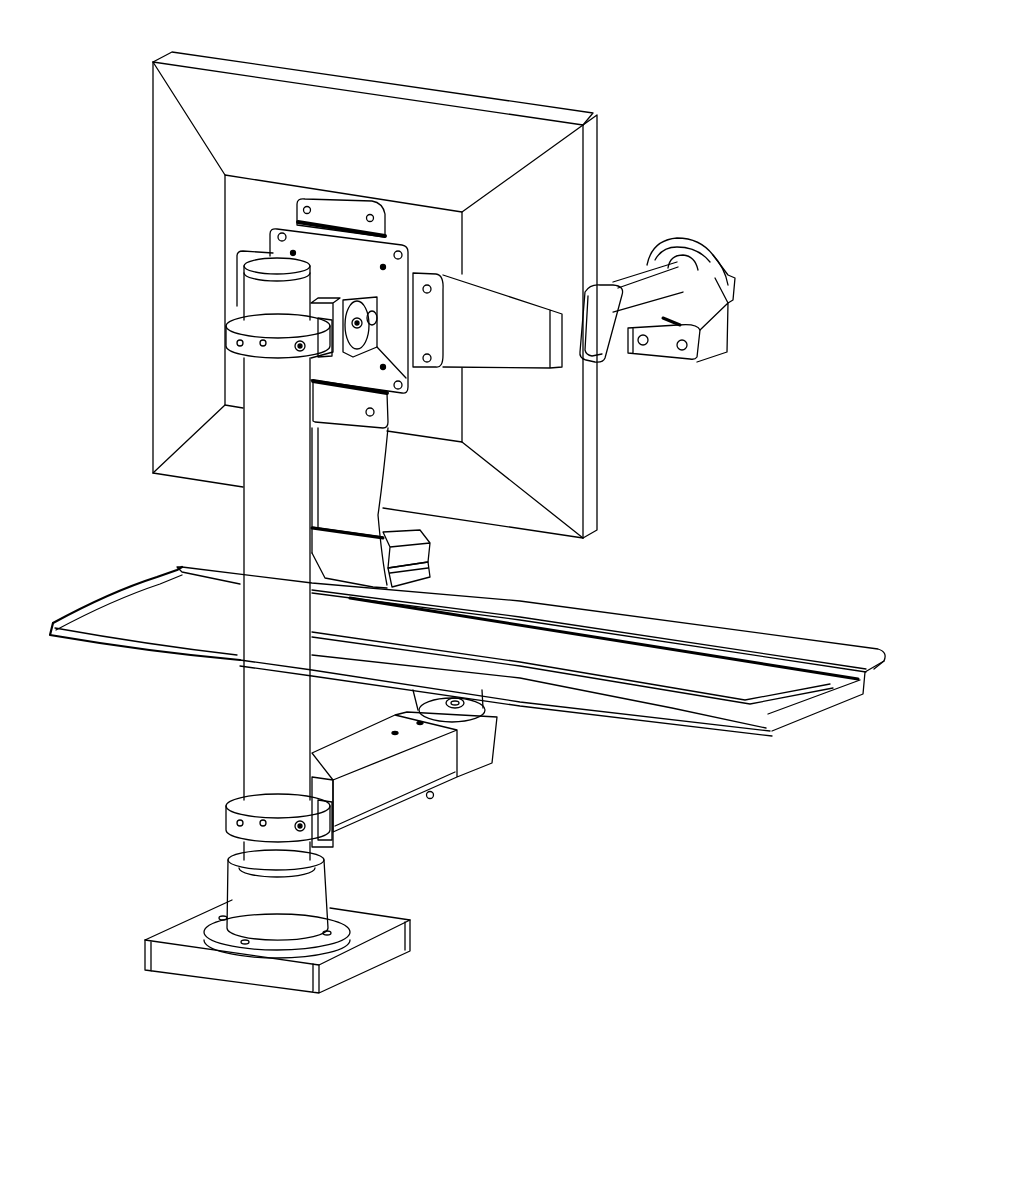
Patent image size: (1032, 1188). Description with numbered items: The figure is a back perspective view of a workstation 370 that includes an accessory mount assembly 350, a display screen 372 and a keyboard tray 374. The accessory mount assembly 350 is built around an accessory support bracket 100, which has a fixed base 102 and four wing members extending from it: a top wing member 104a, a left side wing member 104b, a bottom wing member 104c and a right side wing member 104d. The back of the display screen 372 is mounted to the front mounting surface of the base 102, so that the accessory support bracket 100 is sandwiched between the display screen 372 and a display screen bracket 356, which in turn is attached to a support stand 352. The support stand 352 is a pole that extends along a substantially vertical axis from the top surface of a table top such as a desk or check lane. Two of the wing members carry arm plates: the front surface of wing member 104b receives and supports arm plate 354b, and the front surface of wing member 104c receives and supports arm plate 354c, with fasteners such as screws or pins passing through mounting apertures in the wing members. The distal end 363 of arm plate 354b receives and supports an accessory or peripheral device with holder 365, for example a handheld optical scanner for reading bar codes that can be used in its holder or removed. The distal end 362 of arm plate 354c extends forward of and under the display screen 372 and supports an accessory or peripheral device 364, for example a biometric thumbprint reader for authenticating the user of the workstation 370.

The accessory support bracket 100 is at (437, 262).
The base 102 is at (400, 338).
The top wing member 104a is at (344, 200).
The left side wing member 104b is at (428, 330).
The bottom wing member 104c is at (342, 403).
The right side wing member 104d is at (240, 258).
The accessory mount assembly 350 is at (188, 275).
The support stand 352 is at (243, 728).
The arm plate 354b is at (516, 376).
The arm plate 354c is at (385, 493).
The display screen bracket 356 is at (325, 303).
The distal end 362 is at (430, 574).
The distal end 363 is at (690, 370).
The accessory or peripheral device 364 is at (412, 553).
The accessory or peripheral device with holder 365 is at (674, 240).
The workstation 370 is at (668, 118).
The display screen 372 is at (598, 396).
The keyboard tray 374 is at (758, 738).